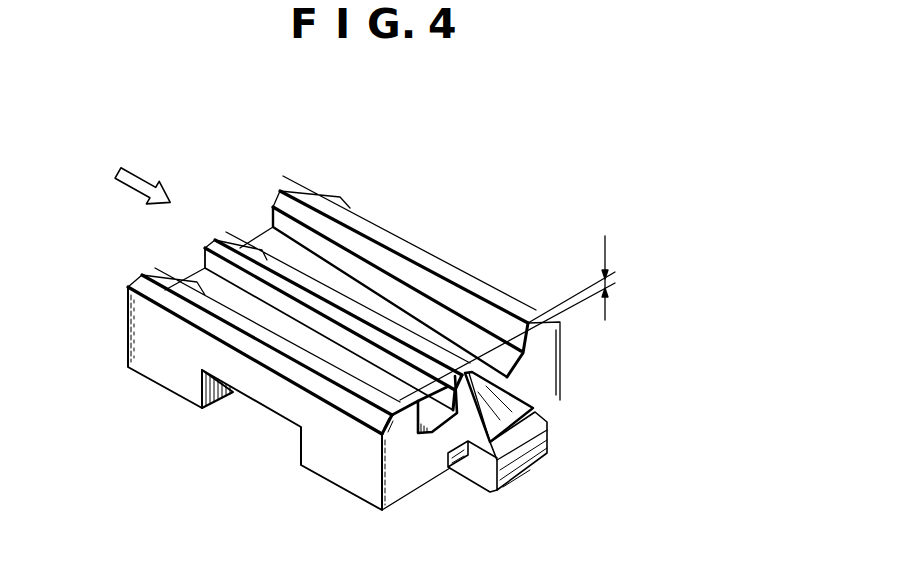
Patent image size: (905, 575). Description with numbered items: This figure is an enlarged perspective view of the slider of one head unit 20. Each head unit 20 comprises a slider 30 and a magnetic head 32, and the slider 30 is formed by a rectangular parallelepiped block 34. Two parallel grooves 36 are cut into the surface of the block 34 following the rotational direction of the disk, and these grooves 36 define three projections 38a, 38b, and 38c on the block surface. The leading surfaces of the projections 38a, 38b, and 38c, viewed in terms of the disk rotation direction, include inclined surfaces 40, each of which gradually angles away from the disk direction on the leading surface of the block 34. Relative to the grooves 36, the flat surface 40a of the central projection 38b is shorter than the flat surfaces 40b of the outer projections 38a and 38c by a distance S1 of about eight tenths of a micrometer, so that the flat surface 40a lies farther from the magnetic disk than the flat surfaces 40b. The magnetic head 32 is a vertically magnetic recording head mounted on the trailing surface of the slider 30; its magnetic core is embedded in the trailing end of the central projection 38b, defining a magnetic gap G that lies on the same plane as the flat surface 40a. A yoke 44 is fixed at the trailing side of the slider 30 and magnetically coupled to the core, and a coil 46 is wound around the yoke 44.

The head unit 20 is at (471, 232).
The slider 30 is at (112, 326).
The magnetic head 32 is at (531, 401).
The rectangular parallelepiped block 34 is at (140, 362).
The grooves 36 is at (395, 305).
The projection 38a is at (461, 273).
The central projection 38b is at (282, 255).
The projection 38c is at (262, 346).
The inclined surfaces 40 is at (290, 184).
The flat surface of central projection 40a is at (440, 379).
The flat surfaces of outer projections 40b is at (521, 316).
The yoke 44 is at (506, 422).
The coil 46 is at (489, 491).
The magnetic gap G is at (478, 371).
The distance S1 is at (574, 268).